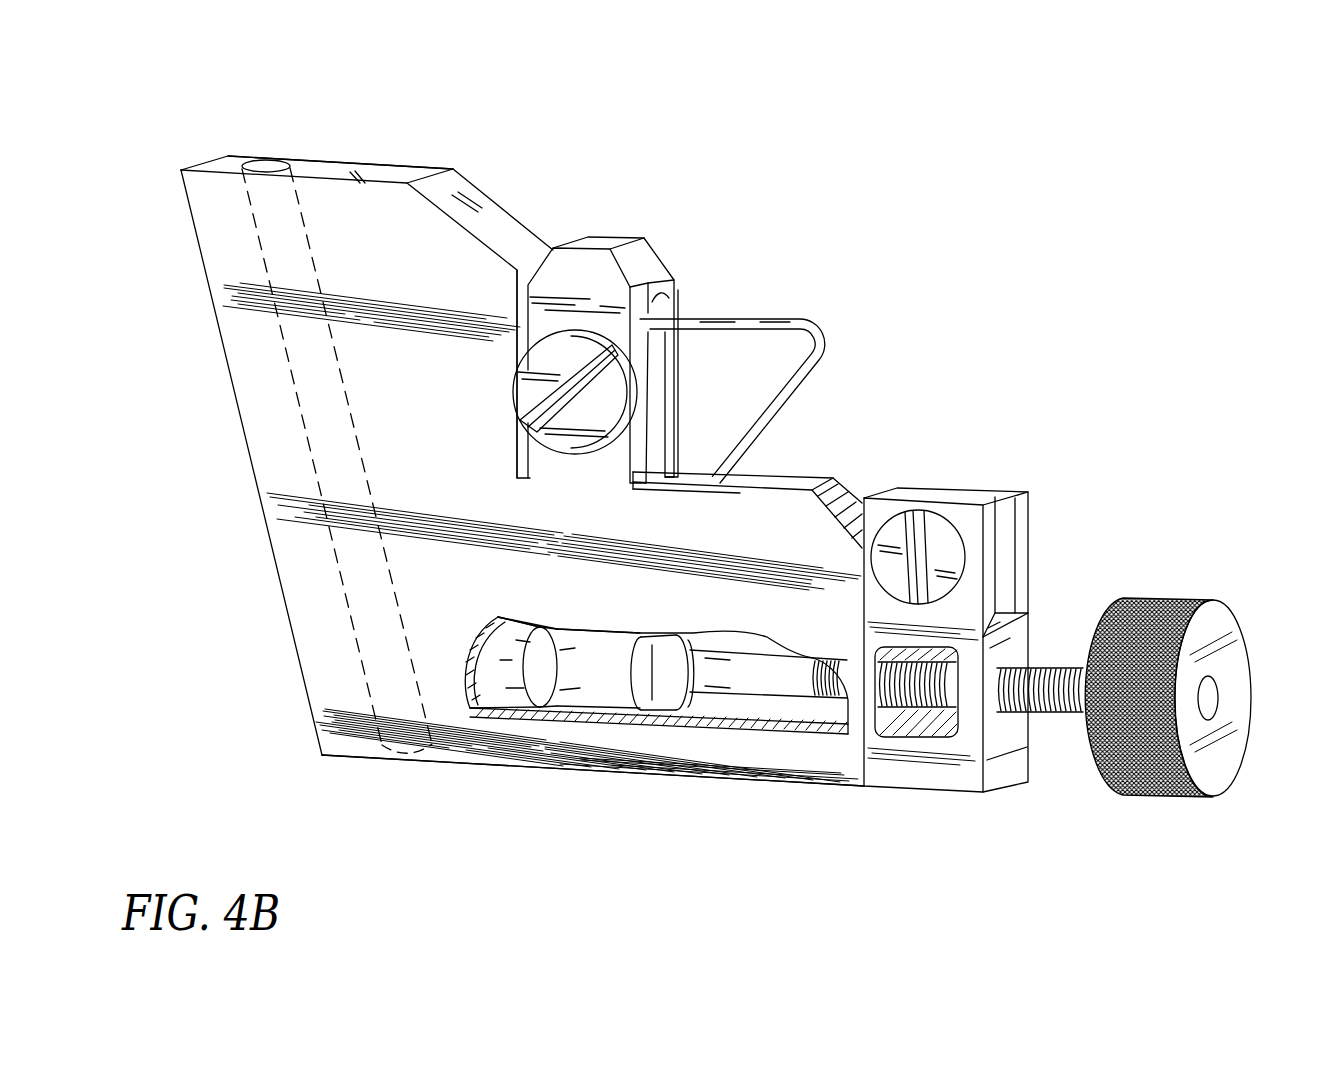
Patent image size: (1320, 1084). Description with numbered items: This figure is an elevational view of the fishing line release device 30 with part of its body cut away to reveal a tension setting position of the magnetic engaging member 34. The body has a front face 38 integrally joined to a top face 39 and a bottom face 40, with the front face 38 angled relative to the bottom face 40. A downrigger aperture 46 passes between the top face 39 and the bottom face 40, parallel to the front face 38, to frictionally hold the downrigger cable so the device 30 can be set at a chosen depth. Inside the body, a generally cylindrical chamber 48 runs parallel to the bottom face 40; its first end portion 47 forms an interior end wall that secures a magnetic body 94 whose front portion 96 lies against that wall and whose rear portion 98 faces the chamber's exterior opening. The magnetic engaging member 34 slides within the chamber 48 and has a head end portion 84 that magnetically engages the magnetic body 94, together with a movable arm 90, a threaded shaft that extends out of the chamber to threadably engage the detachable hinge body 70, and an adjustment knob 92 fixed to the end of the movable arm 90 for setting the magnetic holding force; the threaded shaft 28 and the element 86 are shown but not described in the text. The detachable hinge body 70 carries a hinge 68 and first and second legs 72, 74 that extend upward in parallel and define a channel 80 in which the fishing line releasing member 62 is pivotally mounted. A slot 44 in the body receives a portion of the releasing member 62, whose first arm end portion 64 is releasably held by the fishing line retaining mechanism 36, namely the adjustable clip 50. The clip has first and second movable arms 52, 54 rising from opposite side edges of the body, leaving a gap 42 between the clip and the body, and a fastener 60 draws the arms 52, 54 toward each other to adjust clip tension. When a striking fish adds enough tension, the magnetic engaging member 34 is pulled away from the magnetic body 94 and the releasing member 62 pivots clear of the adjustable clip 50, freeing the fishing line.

The threaded shaft 28 is at (1000, 716).
The fishing line release device 30 is at (1034, 186).
The magnetic engaging member 34 is at (621, 740).
The fishing line retaining mechanism 36 is at (811, 261).
The front face 38 is at (238, 404).
The top face 39 is at (355, 162).
The bottom face 40 is at (461, 768).
The gap 42 is at (517, 462).
The slot 44 is at (826, 480).
The downrigger aperture 46 is at (278, 158).
The first end portion 47 is at (472, 630).
The chamber 48 is at (606, 695).
The adjustable clip 50 is at (658, 225).
The first movable arm 52 is at (575, 247).
The second movable arm 54 is at (620, 237).
The fastener 60 is at (610, 419).
The fishing line releasing member 62 is at (818, 338).
The first arm end portion 64 is at (668, 296).
The hinge 68 is at (893, 523).
The detachable hinge body 70 is at (913, 792).
The first leg 72 is at (944, 498).
The second leg 74 is at (1008, 490).
The channel 80 is at (1003, 565).
The head end portion 84 is at (664, 636).
The flange 86 is at (637, 630).
The movable arm 90 is at (805, 687).
The adjustment knob 92 is at (1125, 797).
The magnetic body 94 is at (512, 670).
The front portion 96 is at (467, 660).
The rear portion 98 is at (550, 710).